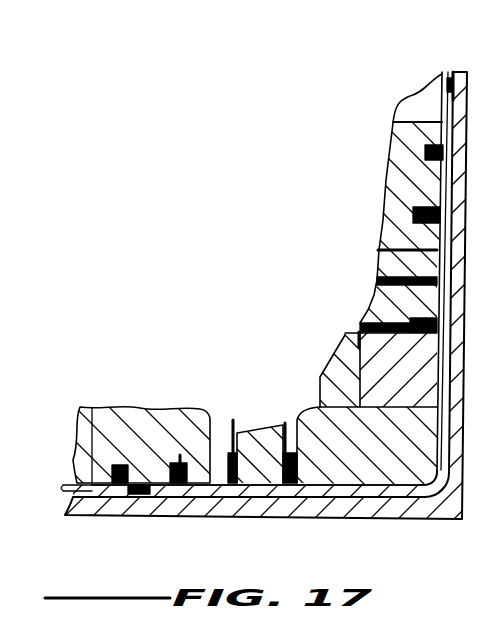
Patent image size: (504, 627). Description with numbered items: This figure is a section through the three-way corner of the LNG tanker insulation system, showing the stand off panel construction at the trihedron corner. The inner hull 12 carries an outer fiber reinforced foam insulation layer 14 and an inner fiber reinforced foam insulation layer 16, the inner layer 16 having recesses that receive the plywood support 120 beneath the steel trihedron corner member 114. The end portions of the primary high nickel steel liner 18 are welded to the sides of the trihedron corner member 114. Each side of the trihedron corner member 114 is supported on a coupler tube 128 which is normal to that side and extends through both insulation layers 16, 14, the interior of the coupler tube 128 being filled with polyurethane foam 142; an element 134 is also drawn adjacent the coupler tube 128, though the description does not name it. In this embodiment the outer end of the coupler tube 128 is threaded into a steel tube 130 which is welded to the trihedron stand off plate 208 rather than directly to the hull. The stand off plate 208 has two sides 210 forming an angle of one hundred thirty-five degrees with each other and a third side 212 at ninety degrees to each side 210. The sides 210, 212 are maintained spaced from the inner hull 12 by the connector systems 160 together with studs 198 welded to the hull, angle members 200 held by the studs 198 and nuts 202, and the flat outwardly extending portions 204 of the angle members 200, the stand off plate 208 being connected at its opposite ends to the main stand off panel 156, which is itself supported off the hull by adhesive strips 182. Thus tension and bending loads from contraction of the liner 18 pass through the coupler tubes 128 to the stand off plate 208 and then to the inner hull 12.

The inner hull 12 is at (113, 517).
The outer fiber reinforced foam insulation layer 14 is at (343, 458).
The inner fiber reinforced foam insulation layer 16 is at (410, 384).
The primary high nickel steel liner 18 is at (0, 201).
The steel trihedron corner member 114 is at (15, 277).
The plywood support 120 is at (0, 331).
The coupler tube 128 is at (252, 430).
The steel tube 130 is at (227, 497).
The insulating block 134 is at (300, 440).
The polyurethane foam 142 is at (258, 426).
The stand off panel 156 is at (444, 74).
The connector system 160 is at (121, 453).
The adhesive strip 182 is at (452, 72).
The stud 198 is at (181, 458).
The angle member 200 is at (153, 478).
The nut 202 is at (204, 470).
The flat outwardly extending portion 204 is at (142, 495).
The trihedron stand off plate 208 is at (407, 493).
The side 210 is at (302, 497).
The third side 212 is at (432, 417).